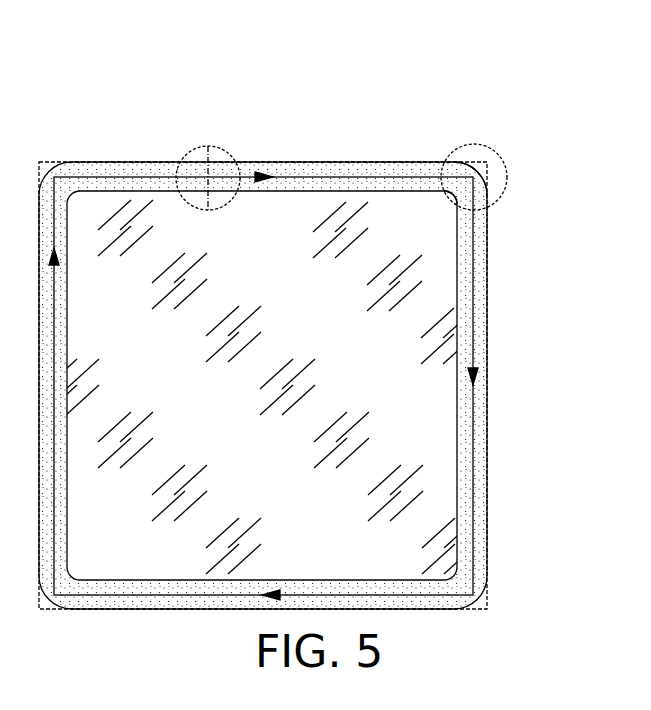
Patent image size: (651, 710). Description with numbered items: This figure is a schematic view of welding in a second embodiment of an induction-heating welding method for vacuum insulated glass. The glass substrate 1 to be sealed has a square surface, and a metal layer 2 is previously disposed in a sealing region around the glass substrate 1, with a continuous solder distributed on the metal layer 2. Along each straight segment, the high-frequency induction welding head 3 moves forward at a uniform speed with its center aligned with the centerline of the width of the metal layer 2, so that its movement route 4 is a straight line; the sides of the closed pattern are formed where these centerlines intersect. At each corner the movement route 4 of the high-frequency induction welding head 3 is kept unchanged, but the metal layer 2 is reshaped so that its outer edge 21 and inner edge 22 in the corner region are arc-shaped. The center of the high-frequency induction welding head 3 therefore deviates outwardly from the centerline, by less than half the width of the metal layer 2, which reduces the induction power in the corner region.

The glass substrate 1 is at (495, 362).
The metal layer 2 is at (332, 172).
The high-frequency induction welding head 3 is at (210, 146).
The movement route of the high-frequency induction welding head 4 is at (87, 178).
The outer edge of the metal layer in a corner region 21 is at (443, 163).
The inner edge of the metal layer in a corner region 22 is at (452, 197).